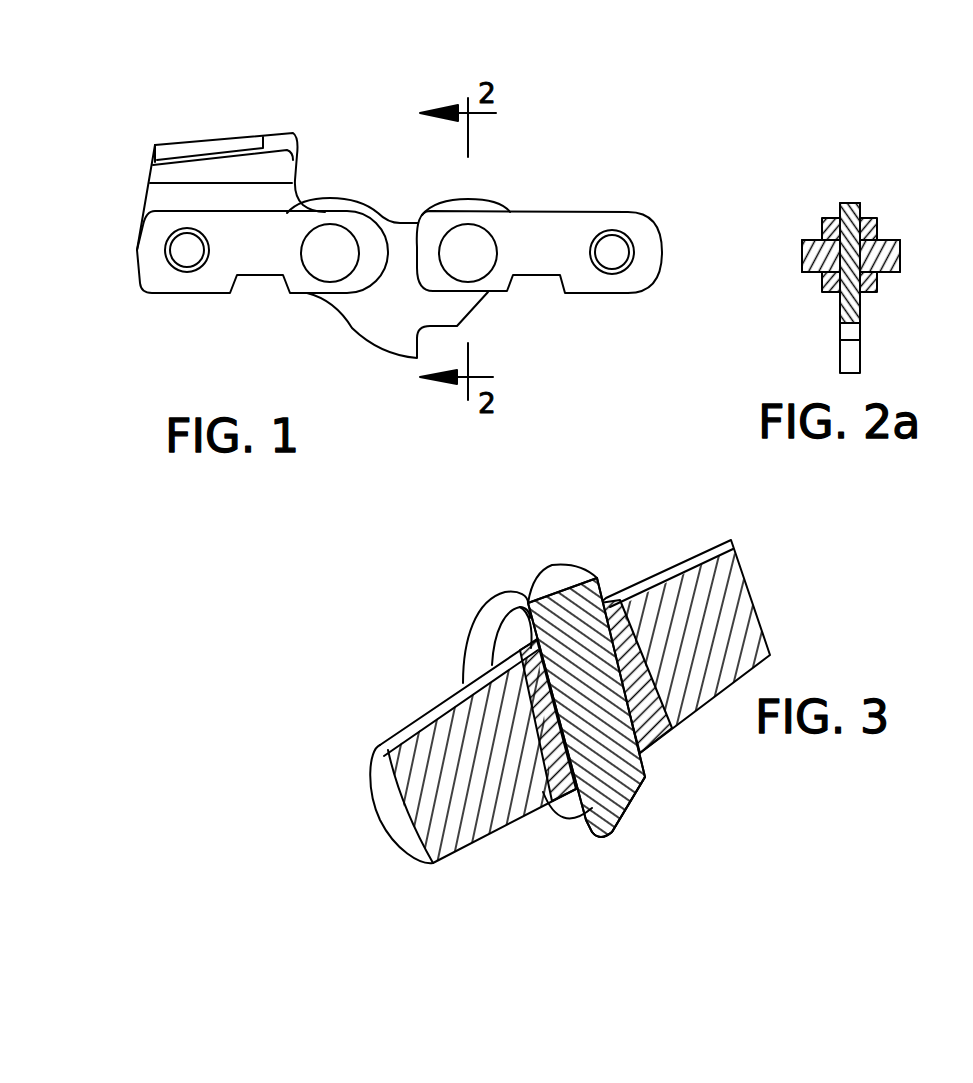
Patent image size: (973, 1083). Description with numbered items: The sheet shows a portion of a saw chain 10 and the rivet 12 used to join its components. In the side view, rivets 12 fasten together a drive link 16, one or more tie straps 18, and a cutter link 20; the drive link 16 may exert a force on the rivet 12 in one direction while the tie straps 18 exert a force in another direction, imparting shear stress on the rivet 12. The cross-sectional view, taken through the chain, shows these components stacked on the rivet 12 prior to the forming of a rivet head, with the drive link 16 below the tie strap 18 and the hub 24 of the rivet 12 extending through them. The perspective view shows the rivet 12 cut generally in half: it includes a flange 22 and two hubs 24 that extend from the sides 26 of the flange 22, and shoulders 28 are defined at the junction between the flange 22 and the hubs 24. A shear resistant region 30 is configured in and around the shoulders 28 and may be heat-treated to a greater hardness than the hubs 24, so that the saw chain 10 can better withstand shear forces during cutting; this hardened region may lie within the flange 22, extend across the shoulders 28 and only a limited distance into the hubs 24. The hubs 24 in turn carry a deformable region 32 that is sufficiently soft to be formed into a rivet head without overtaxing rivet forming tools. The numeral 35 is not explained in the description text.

In FIG. 1, the saw chain 10 is at (594, 146).
In FIG. 1, the rivet 12 is at (333, 226).
In FIG. 2a, the rivet 12 is at (847, 248).
In FIG. 3, the rivet 12 is at (493, 598).
In FIG. 1, the drive link 16 is at (372, 326).
In FIG. 2a, the drive link 16 is at (840, 357).
In FIG. 1, the tie strap 18 is at (607, 212).
In FIG. 2a, the tie strap 18 is at (873, 220).
In FIG. 1, the cutter link 20 is at (185, 153).
In FIG. 3, the flange 22 is at (537, 570).
In FIG. 2a, the hub 24 is at (900, 258).
In FIG. 3, the hub 24 is at (433, 713).
In FIG. 3, the side of the flange 26 is at (653, 772).
In FIG. 3, the shoulder 28 is at (477, 635).
In FIG. 3, the shear resistant region 30 is at (537, 810).
In FIG. 3, the deformable region 32 is at (417, 777).
In FIG. 1, the rivet bushing 35 is at (637, 256).